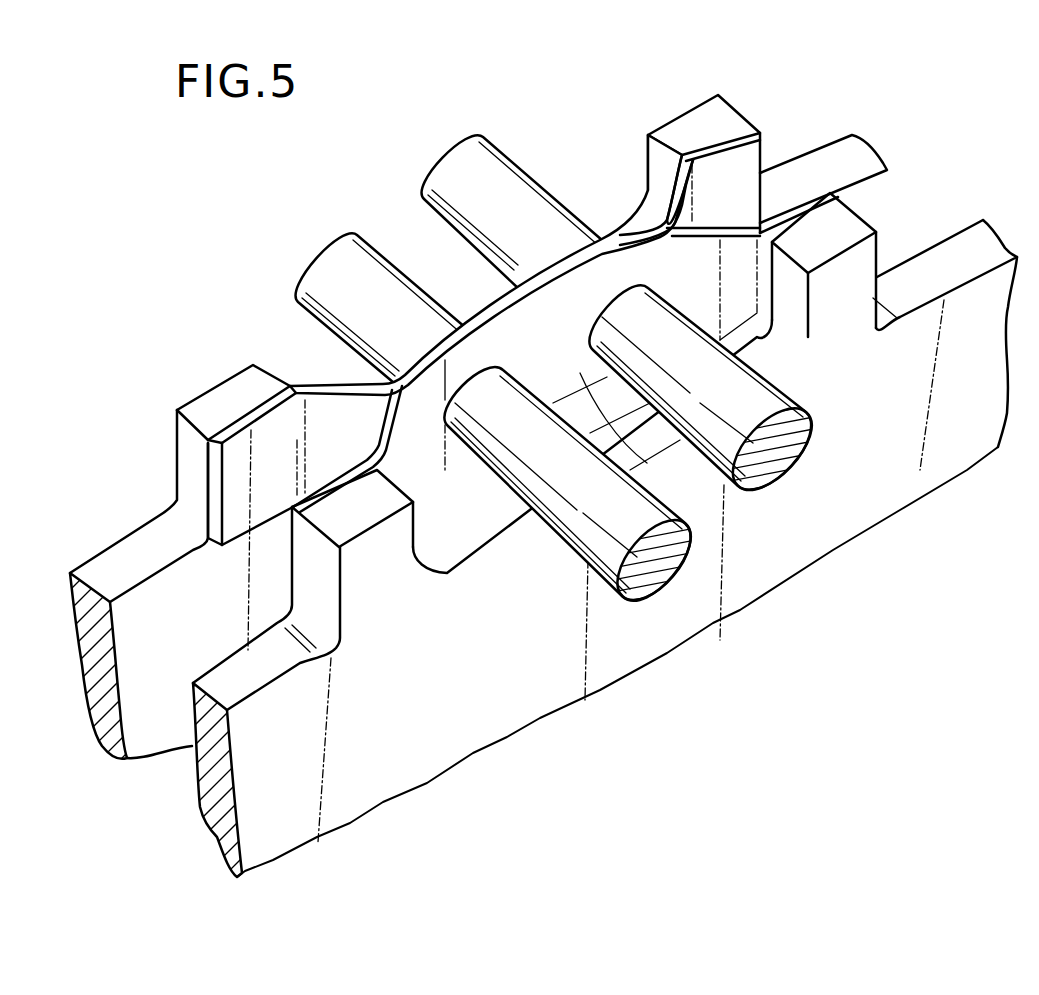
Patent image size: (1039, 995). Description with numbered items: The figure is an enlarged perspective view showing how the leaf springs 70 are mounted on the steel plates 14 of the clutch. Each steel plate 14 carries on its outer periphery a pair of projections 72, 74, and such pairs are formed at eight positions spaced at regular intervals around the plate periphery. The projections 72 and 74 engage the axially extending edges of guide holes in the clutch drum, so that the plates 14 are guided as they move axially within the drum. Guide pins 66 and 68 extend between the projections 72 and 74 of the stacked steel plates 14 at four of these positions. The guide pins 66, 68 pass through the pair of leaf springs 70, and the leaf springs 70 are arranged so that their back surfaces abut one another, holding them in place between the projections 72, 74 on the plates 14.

The steel plates 14 is at (150, 740).
The guide pin 66 is at (592, 600).
The guide pin 68 is at (757, 417).
The leaf springs 70 is at (473, 308).
The projection 72 is at (192, 472).
The projection 74 is at (733, 113).